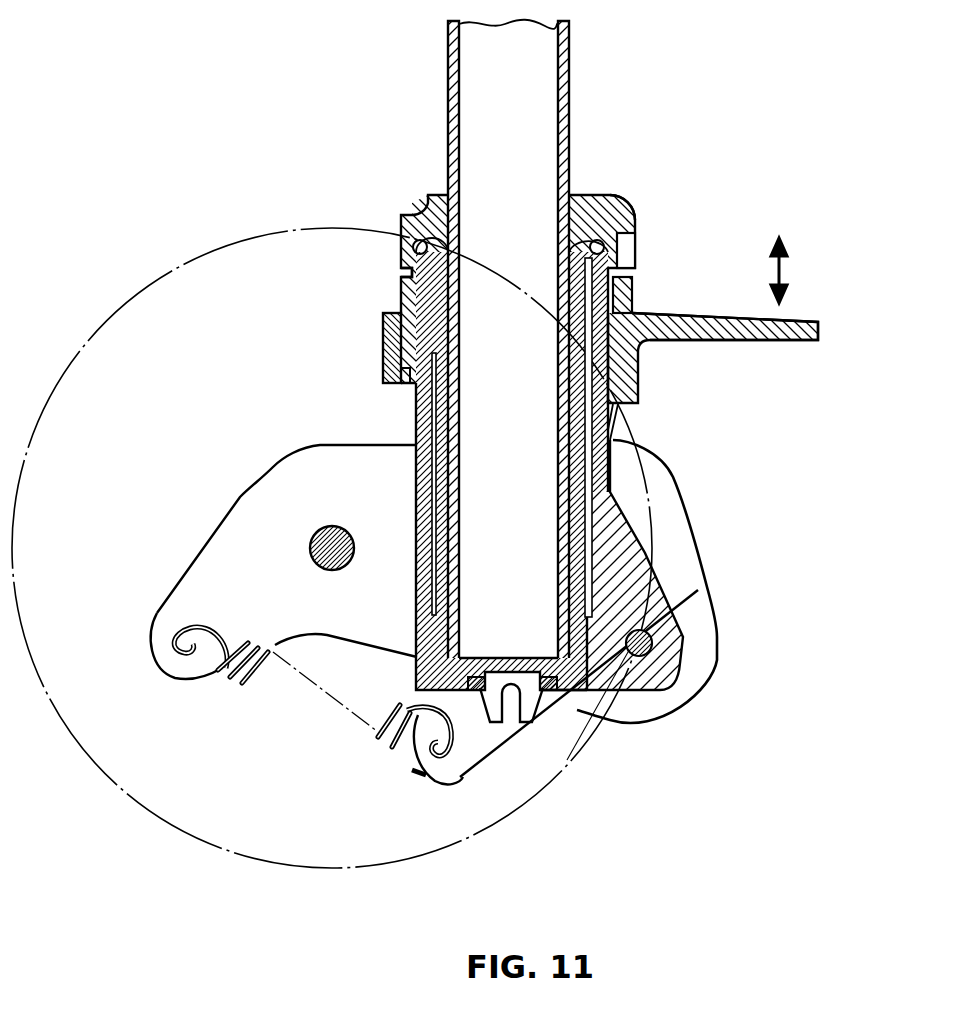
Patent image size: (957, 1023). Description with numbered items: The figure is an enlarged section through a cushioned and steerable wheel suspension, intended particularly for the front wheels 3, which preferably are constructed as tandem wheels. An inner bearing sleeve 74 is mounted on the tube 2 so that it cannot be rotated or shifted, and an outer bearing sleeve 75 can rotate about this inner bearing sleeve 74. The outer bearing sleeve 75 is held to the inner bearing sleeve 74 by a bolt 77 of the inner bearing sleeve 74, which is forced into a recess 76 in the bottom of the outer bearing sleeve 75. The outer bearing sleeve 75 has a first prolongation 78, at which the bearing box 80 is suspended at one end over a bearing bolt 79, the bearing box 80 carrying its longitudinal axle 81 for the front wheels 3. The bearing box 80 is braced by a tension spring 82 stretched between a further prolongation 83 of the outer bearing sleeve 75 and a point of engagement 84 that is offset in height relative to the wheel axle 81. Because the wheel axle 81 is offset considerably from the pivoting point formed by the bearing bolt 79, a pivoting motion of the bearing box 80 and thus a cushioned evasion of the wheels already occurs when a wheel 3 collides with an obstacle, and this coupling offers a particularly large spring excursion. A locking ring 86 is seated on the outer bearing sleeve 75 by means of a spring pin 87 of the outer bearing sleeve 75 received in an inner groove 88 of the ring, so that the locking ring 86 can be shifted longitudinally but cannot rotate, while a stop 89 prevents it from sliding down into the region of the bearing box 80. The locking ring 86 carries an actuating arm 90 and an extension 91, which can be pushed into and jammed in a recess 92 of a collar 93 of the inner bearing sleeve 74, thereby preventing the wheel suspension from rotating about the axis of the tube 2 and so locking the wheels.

The tube 2 is at (566, 90).
The front wheel 3 is at (192, 838).
The inner bearing sleeve 74 is at (632, 215).
The outer bearing sleeve 75 is at (412, 423).
The recess 76 is at (563, 693).
The bolt 77 is at (550, 693).
The first prolongation 78 is at (700, 642).
The bearing bolt 79 is at (693, 693).
The bearing box 80 is at (278, 473).
The longitudinal axle 81 is at (312, 551).
The tension spring 82 is at (245, 684).
The further prolongation 83 is at (463, 768).
The point of engagement 84 is at (152, 630).
The locking ring 86 is at (635, 365).
The spring pin 87 is at (403, 292).
The inner groove 88 is at (408, 378).
The stop 89 is at (612, 408).
The actuating arm 90 is at (803, 320).
The extension 91 is at (623, 290).
The recess 92 is at (627, 248).
The collar 93 is at (600, 200).